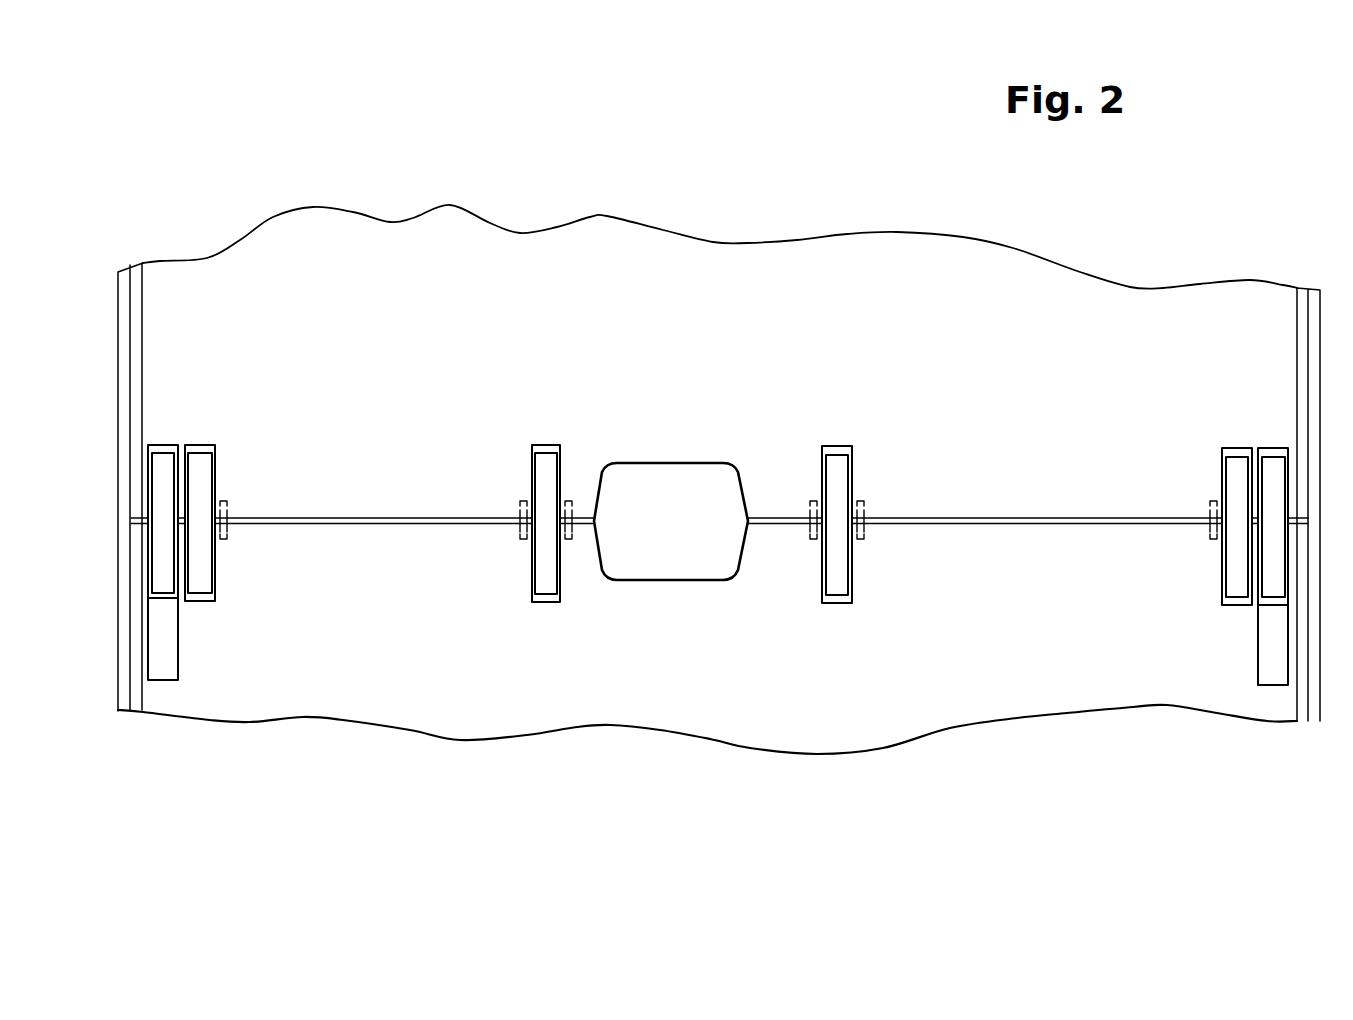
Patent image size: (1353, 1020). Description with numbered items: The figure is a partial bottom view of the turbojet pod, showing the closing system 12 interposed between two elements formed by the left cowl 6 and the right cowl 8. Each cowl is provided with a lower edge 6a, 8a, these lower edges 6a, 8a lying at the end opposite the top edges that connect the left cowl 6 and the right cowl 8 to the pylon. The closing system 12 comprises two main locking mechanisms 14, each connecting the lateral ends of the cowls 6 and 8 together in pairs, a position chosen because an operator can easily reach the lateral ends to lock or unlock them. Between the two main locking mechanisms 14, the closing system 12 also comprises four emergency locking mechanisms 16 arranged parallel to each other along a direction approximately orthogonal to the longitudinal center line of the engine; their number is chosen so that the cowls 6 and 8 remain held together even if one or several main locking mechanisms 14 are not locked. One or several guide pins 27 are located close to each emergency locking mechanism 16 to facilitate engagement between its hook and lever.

The left cowl 6 is at (1043, 682).
The right cowl 8 is at (943, 267).
The lower edge 6a is at (292, 520).
The lower edge 8a is at (438, 518).
The closing system 12 is at (585, 443).
The main locking mechanism 14 is at (165, 445).
The emergency locking mechanism 16 is at (203, 445).
The guide pin 27 is at (228, 537).